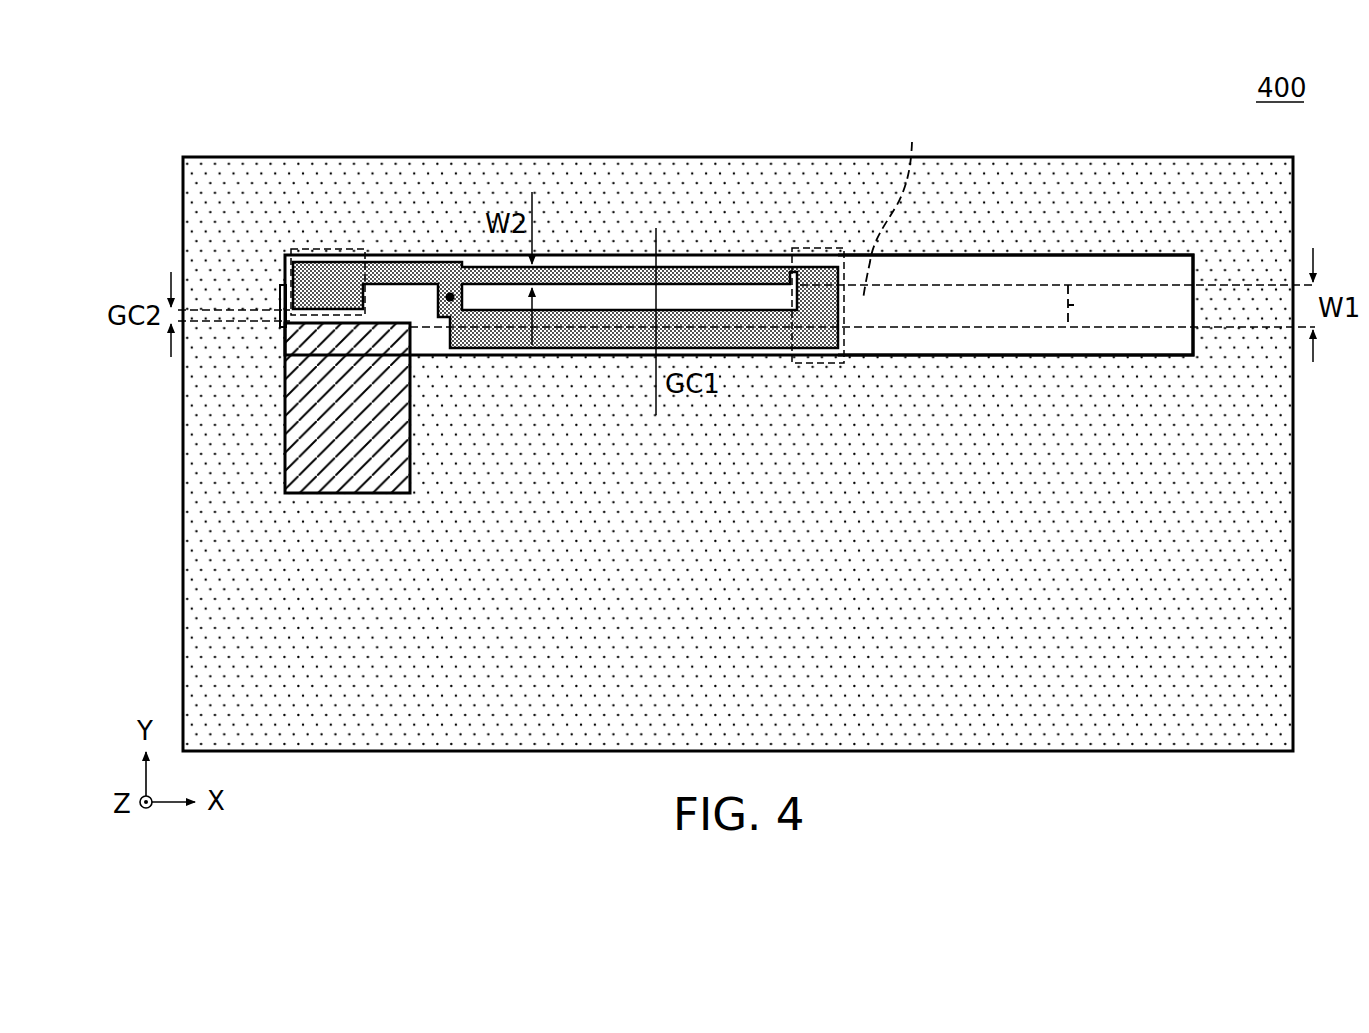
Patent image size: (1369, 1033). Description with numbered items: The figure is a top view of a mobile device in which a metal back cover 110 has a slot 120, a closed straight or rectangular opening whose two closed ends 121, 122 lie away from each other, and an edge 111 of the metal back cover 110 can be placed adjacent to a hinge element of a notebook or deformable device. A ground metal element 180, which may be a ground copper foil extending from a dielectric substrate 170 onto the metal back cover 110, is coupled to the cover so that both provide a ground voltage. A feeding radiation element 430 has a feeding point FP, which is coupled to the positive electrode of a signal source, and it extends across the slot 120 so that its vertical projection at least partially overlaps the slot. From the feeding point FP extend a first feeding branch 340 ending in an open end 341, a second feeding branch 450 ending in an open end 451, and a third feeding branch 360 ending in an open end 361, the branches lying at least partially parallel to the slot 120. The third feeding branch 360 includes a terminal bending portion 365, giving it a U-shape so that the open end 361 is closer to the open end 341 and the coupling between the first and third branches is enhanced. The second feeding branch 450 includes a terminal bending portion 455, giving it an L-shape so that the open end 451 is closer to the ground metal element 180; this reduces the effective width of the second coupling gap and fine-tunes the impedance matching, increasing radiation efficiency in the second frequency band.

The metal back cover 110 is at (1176, 733).
The edge 111 is at (690, 157).
The dielectric substrate 170 is at (1138, 272).
The ground metal element 180 is at (307, 432).
The feeding radiation element 430 is at (191, 37).
The second feeding branch 450 is at (377, 268).
The first feeding branch 340 is at (621, 277).
The third feeding branch 360 is at (605, 430).
The open end 361 is at (817, 272).
The open end 341 is at (793, 273).
The feeding point FP is at (450, 293).
The terminal bending portion 455 is at (302, 249).
The terminal bending portion 365 is at (842, 248).
The closed end 121 is at (280, 300).
The open end 451 is at (328, 309).
The slot 120 is at (902, 205).
The closed end 122 is at (1070, 305).